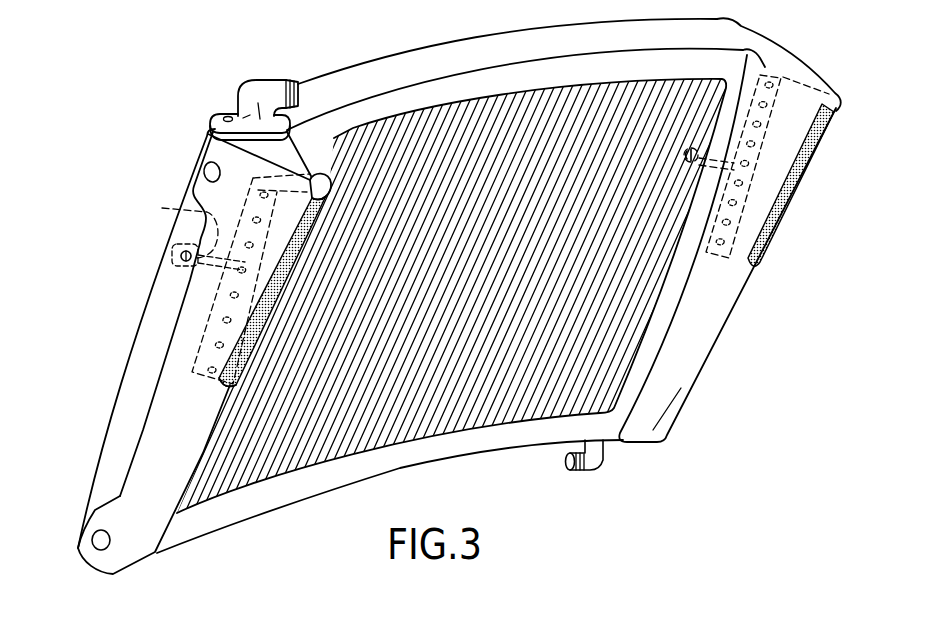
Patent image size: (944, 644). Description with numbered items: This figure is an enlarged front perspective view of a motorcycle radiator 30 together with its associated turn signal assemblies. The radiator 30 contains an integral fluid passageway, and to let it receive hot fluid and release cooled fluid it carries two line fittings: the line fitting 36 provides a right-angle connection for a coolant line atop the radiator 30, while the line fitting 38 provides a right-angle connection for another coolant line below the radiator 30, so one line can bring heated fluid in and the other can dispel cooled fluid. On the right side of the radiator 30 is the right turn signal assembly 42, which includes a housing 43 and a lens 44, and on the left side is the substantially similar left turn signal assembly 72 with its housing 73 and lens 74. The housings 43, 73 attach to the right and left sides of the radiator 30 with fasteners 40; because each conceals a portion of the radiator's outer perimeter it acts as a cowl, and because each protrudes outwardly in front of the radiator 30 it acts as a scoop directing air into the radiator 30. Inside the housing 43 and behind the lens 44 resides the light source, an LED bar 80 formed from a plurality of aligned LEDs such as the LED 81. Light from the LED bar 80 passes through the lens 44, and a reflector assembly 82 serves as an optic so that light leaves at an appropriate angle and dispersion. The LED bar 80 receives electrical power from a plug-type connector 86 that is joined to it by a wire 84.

The radiator 30 is at (454, 297).
The line fitting 36 is at (263, 94).
The line fitting 38 is at (597, 458).
The fasteners 40 is at (204, 171).
The right turn signal assembly 42 is at (152, 380).
The housing 43 is at (184, 427).
The lens 44 is at (302, 246).
The left turn signal assembly 72 is at (750, 295).
The housing 73 is at (714, 311).
The lens 74 is at (806, 151).
The LED bar 80 is at (202, 318).
The LED 81 is at (236, 381).
The reflector assembly 82 is at (311, 176).
The wire 84 is at (174, 223).
The plug-type connector 86 is at (182, 246).